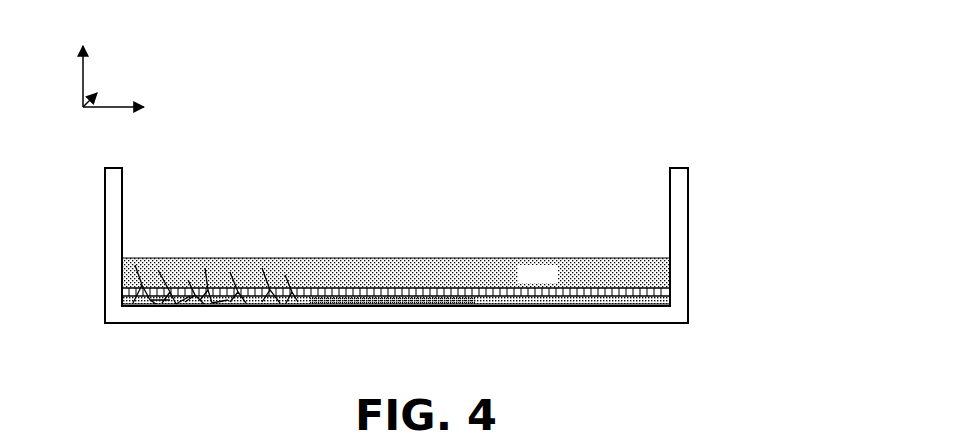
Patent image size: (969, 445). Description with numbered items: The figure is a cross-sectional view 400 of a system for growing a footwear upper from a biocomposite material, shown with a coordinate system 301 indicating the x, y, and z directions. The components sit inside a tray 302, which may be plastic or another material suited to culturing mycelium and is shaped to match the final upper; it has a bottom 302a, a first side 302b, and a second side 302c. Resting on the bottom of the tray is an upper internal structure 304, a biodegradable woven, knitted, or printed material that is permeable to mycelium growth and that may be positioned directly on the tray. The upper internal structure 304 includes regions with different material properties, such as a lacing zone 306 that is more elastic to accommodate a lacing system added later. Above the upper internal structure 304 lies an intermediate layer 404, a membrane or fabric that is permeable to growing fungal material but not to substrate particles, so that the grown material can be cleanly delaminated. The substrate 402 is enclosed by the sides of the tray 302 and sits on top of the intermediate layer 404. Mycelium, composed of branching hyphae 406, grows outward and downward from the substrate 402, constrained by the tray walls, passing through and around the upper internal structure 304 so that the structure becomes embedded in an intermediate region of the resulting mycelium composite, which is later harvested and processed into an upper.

The coordinate system 301 is at (140, 68).
The tray 302 is at (684, 170).
The bottom 302a is at (590, 323).
The first side 302b is at (688, 207).
The second side 302c is at (105, 200).
The upper internal structure 304 is at (668, 302).
The lacing zone 306 is at (400, 301).
The cross-sectional view 400 is at (701, 104).
The substrate 402 is at (553, 282).
The intermediate layer 404 is at (122, 290).
The hyphae 406 is at (236, 242).